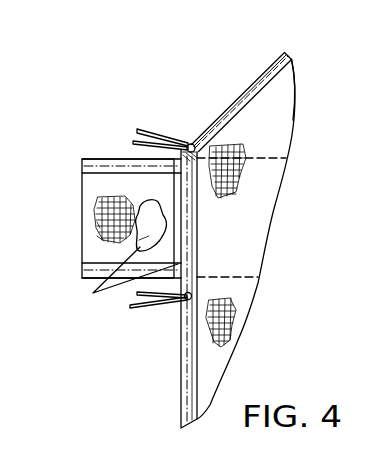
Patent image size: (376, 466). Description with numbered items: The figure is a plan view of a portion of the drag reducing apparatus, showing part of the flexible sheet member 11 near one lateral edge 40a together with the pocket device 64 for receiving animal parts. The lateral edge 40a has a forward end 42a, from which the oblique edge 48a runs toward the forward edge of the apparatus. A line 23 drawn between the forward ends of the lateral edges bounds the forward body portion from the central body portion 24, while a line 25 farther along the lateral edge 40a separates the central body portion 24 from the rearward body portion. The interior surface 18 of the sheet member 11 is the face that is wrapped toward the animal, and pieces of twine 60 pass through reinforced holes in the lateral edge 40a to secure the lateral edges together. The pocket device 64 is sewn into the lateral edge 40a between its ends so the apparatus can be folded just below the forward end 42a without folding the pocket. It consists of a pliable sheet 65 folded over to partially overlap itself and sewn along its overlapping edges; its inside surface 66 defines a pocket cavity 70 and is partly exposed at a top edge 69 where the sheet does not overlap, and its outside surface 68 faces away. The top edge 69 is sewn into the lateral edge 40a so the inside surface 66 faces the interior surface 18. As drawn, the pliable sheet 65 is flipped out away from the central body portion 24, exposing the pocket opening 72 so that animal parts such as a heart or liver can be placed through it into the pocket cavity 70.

The flexible sheet member 11 is at (263, 100).
The interior surface 18 is at (284, 103).
The line 23 is at (258, 160).
The central body portion 24 is at (263, 203).
The line 25 is at (245, 277).
The lateral edge 40a is at (197, 244).
The forward end 42a is at (188, 145).
The oblique edge 48a is at (272, 60).
The twine 60 is at (144, 131).
The pocket device 64 is at (104, 189).
The pliable sheet 65 is at (92, 213).
The inside surface 66 is at (121, 284).
The outside surface 68 is at (92, 244).
The top edge 69 is at (197, 264).
The pocket cavity 70 is at (144, 239).
The pocket opening 72 is at (175, 212).